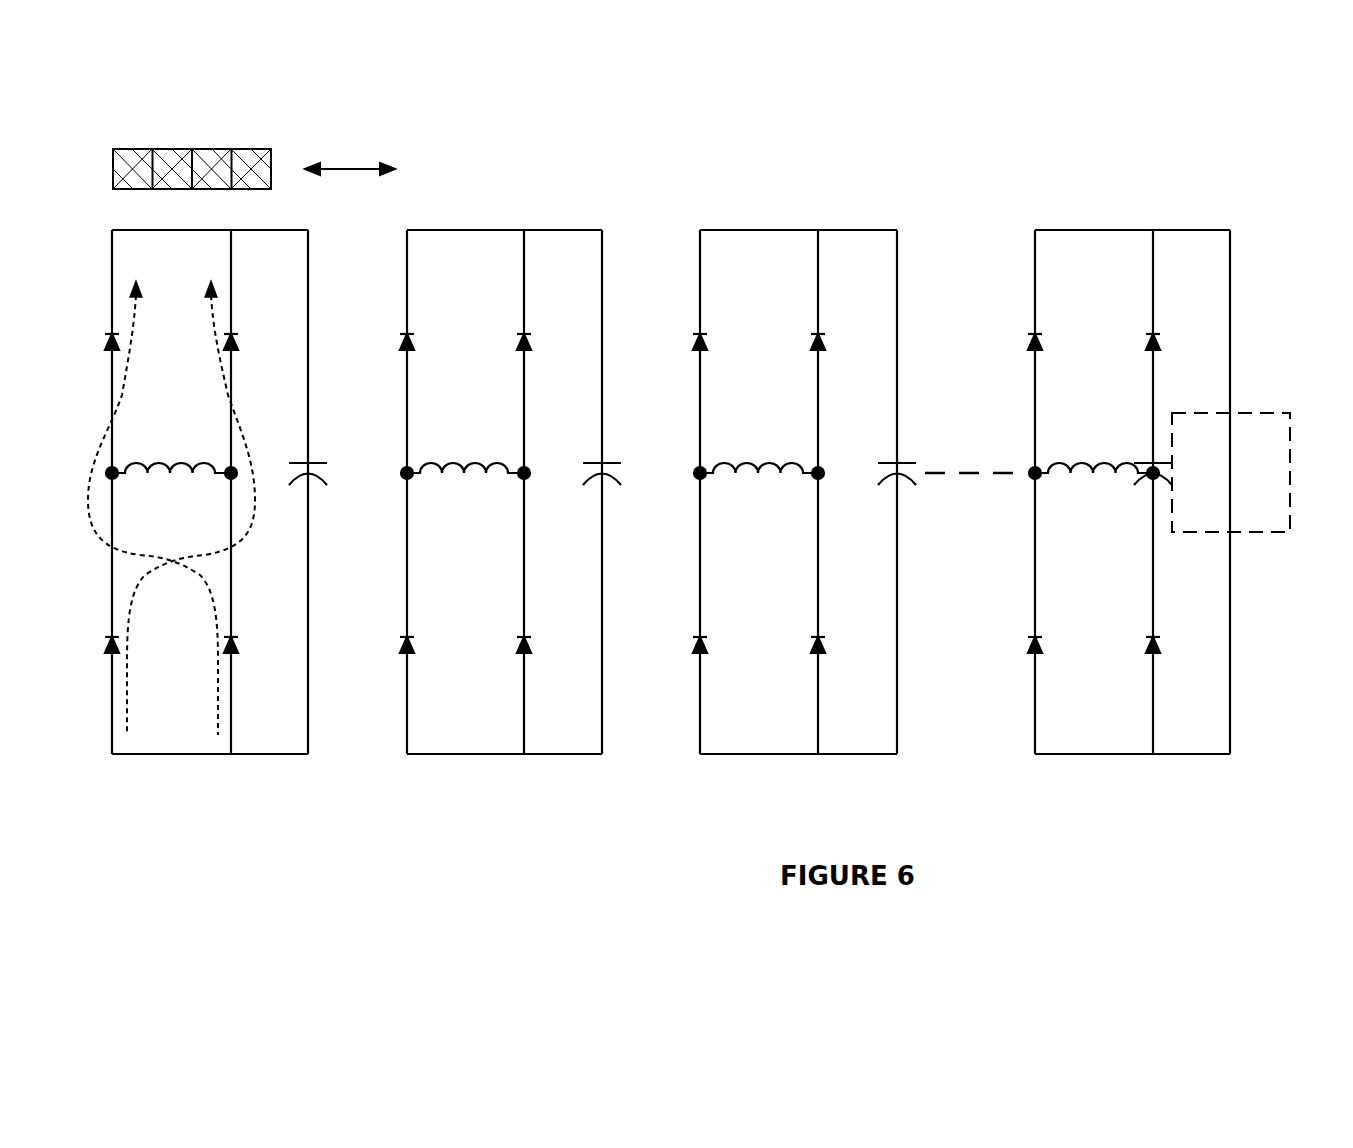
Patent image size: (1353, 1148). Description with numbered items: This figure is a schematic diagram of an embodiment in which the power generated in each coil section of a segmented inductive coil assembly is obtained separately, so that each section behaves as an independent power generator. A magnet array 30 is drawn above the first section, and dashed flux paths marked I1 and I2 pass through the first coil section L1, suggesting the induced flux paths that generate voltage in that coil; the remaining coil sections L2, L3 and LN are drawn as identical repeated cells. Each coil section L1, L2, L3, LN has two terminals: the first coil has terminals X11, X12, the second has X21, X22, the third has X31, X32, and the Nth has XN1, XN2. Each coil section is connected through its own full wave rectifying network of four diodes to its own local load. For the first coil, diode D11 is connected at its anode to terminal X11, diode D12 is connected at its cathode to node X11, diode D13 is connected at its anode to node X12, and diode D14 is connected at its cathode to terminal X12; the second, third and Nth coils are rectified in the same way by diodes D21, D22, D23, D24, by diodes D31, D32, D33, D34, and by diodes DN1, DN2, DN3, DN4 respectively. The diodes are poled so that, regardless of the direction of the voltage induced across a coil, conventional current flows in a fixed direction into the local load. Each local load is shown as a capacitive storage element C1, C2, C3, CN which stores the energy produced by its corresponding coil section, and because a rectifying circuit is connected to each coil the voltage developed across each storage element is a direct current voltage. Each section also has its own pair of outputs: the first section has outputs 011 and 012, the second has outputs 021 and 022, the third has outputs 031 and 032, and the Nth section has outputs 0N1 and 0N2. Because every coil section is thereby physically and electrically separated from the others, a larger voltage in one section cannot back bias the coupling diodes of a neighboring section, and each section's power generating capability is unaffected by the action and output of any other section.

The magnet array 30 is at (133, 149).
The output 011 is at (273, 230).
The output 012 is at (288, 757).
The output 021 is at (573, 230).
The output 022 is at (582, 757).
The output 031 is at (868, 230).
The output 032 is at (870, 757).
The output 0N1 is at (1207, 230).
The output 0N2 is at (1205, 757).
The diode D11 is at (93, 347).
The diode D12 is at (93, 650).
The diode D13 is at (251, 336).
The diode D14 is at (251, 640).
The diode D21 is at (388, 347).
The diode D22 is at (388, 650).
The diode D23 is at (544, 336).
The diode D24 is at (544, 640).
The diode D31 is at (681, 347).
The diode D32 is at (681, 650).
The diode D33 is at (838, 336).
The diode D34 is at (838, 640).
The diode DN1 is at (1015, 347).
The diode DN2 is at (1015, 650).
The diode DN3 is at (1174, 336).
The diode DN4 is at (1174, 640).
The coil section L1 is at (171, 450).
The coil section L2 is at (465, 450).
The coil section L3 is at (759, 450).
The coil section LN is at (1094, 450).
The capacitive storage element C1 is at (299, 458).
The capacitive storage element C2 is at (593, 458).
The capacitive storage element C3 is at (888, 458).
The capacitive storage element CN is at (1212, 472).
The terminal X11 is at (117, 478).
The terminal X12 is at (229, 479).
The terminal X21 is at (412, 478).
The terminal X22 is at (522, 479).
The terminal X31 is at (705, 478).
The terminal X32 is at (816, 479).
The terminal XN1 is at (1040, 478).
The terminal XN2 is at (1152, 479).
The current flow path I1 is at (154, 509).
The current flow path I2 is at (191, 509).